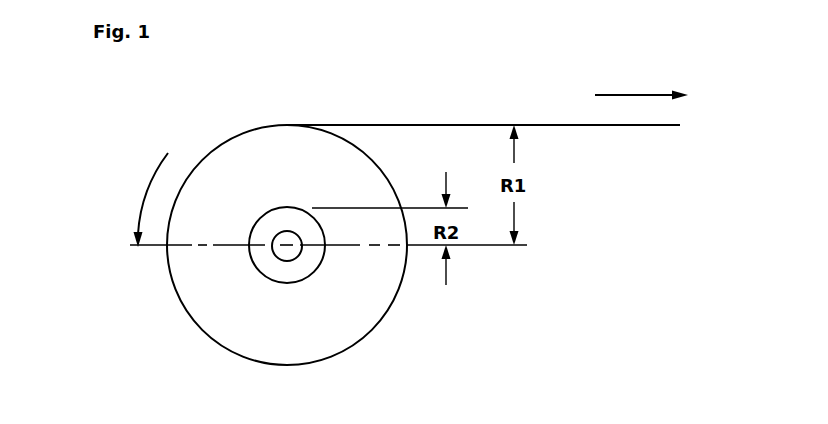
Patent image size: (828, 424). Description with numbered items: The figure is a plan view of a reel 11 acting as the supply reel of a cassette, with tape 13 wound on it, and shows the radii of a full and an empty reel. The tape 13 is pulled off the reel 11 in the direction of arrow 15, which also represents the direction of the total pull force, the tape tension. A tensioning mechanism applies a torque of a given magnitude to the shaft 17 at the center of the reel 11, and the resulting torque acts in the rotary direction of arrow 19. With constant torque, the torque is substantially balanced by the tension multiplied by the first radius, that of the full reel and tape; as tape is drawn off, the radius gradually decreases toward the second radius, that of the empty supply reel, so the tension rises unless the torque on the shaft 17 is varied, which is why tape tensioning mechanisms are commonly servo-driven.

The reel 11 is at (250, 362).
The tape 13 is at (612, 125).
The arrow 15 is at (620, 93).
The shaft 17 is at (295, 253).
The arrow 19 is at (143, 198).